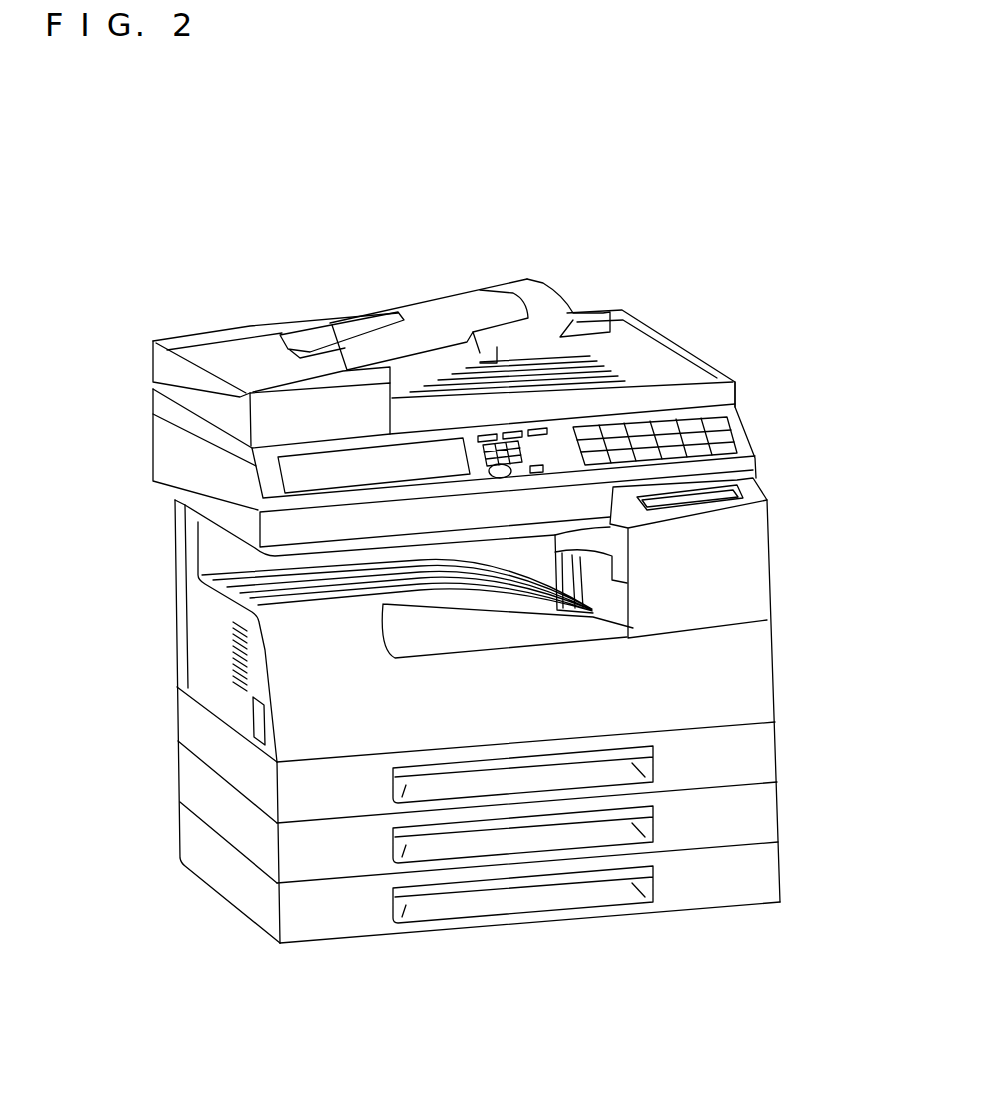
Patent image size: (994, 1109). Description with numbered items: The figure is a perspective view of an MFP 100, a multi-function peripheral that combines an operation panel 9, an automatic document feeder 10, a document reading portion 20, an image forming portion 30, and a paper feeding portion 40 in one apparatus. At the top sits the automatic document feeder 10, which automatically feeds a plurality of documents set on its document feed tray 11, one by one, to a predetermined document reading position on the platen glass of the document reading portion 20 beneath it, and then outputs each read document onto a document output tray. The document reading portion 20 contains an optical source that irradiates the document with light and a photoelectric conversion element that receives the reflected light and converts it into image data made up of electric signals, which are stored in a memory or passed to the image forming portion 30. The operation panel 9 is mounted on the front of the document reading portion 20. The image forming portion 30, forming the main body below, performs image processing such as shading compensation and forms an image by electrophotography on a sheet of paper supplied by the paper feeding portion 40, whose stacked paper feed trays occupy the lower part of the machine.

The MFP 100 is at (170, 167).
The automatic document feeder 10 is at (235, 319).
The document feed tray 11 is at (337, 346).
The document reading portion 20 is at (143, 448).
The operation panel 9 is at (548, 449).
The image forming portion 30 is at (780, 613).
The paper feeding portion 40 is at (162, 679).